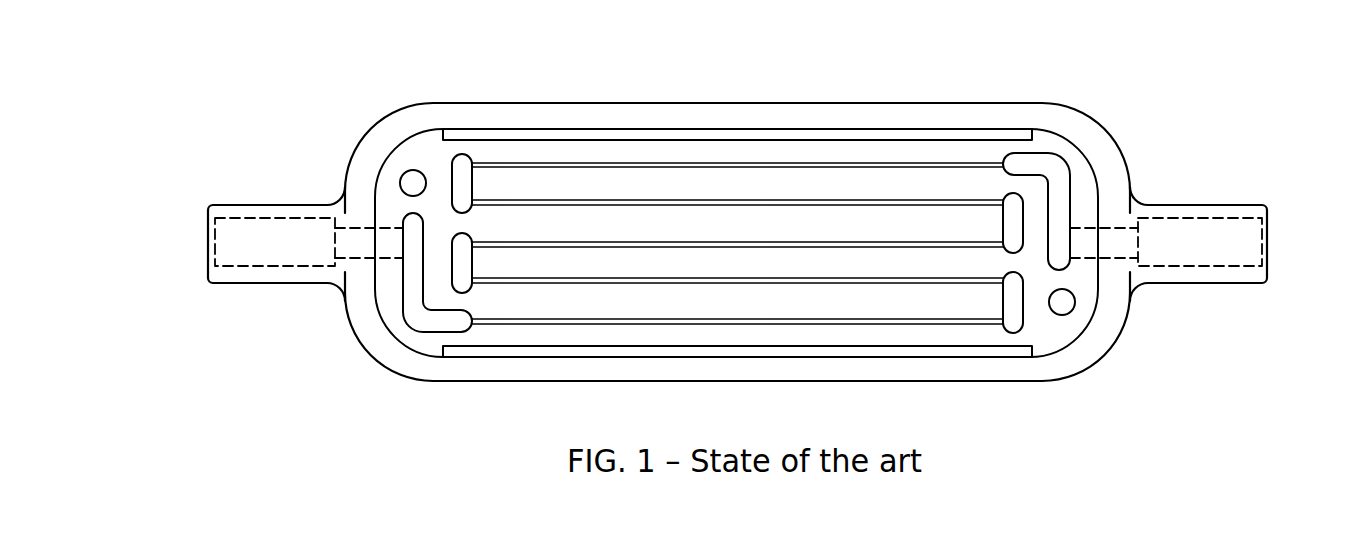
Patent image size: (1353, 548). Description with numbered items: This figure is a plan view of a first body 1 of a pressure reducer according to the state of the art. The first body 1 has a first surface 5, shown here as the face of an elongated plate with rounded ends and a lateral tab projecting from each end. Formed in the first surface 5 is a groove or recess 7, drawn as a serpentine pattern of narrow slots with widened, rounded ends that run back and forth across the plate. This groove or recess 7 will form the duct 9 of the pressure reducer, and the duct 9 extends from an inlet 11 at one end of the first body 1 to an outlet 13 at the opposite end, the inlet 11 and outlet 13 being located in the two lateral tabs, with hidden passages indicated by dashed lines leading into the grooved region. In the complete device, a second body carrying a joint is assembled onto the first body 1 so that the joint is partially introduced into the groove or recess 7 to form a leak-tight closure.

The first body 1 is at (1065, 352).
The first surface 5 is at (502, 152).
The groove or recess 7 is at (733, 163).
The duct 9 is at (883, 162).
The inlet 11 is at (263, 248).
The outlet 13 is at (1197, 250).